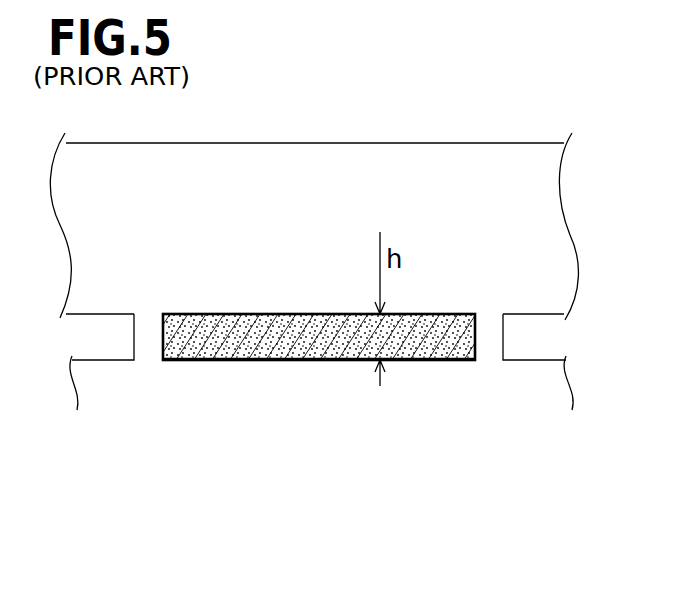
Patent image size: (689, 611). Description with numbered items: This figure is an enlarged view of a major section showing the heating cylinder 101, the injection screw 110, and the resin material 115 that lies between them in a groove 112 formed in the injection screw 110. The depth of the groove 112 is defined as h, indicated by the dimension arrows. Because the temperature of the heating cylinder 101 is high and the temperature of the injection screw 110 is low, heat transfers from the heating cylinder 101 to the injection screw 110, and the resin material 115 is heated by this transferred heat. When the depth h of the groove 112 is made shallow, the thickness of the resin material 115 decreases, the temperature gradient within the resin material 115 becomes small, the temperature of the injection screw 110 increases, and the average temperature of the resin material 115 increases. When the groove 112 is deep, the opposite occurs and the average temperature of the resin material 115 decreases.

The heating cylinder 101 is at (299, 186).
The injection screw 110 is at (323, 376).
The groove 112 is at (314, 355).
The resin material 115 is at (236, 363).